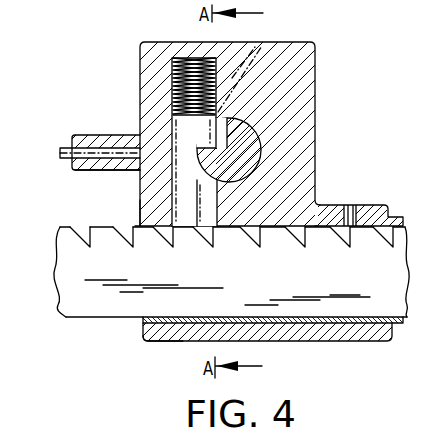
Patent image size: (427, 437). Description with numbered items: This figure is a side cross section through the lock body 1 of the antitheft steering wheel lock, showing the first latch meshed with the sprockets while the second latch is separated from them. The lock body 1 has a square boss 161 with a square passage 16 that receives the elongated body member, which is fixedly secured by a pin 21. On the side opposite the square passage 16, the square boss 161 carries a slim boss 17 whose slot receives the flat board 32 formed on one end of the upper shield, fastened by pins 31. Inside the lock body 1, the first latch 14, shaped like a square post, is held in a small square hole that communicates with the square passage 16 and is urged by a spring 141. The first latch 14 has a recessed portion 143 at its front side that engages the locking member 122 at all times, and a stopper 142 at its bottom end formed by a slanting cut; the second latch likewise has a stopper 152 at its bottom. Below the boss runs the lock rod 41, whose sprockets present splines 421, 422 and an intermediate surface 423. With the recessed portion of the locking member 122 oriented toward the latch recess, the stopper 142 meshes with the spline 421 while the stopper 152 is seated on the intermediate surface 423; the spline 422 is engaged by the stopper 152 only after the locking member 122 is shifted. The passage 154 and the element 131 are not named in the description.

The lock body 1 is at (297, 57).
The first latch 14 is at (177, 125).
The spring 141 is at (182, 60).
The stopper 142 is at (222, 232).
The recessed portion 143 is at (207, 193).
The stopper 152 is at (173, 213).
The passage 154 is at (258, 48).
The locking member 122 is at (247, 143).
The square passage 16 is at (293, 333).
The square boss 161 is at (363, 333).
The slim boss 17 is at (72, 168).
The pin 21 is at (362, 207).
The pins 31 is at (104, 127).
The flat board 32 is at (62, 147).
The lock rod 41 is at (82, 307).
The spline 421 is at (212, 233).
The spline 422 is at (150, 226).
The intermediate surface 423 is at (183, 238).
The pad 131 is at (183, 339).